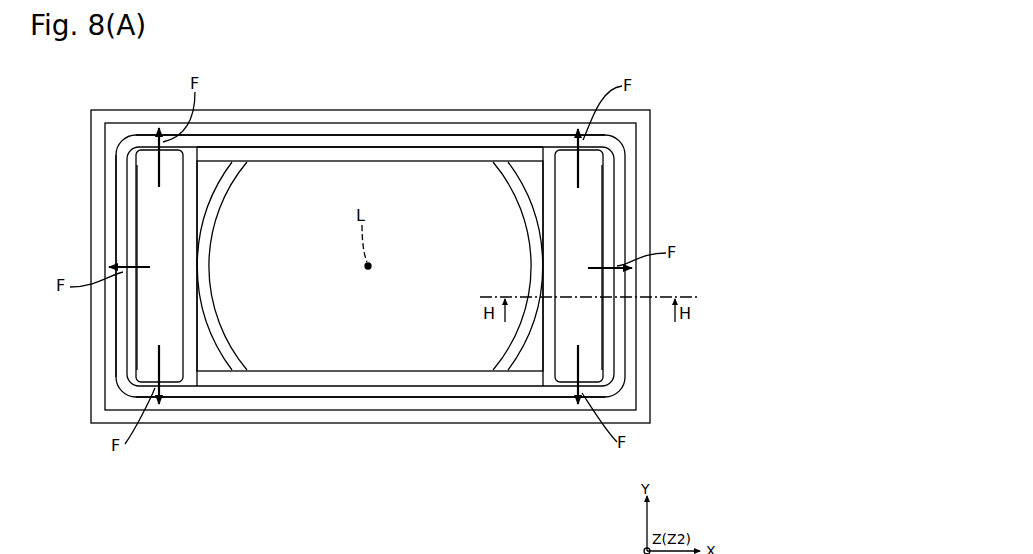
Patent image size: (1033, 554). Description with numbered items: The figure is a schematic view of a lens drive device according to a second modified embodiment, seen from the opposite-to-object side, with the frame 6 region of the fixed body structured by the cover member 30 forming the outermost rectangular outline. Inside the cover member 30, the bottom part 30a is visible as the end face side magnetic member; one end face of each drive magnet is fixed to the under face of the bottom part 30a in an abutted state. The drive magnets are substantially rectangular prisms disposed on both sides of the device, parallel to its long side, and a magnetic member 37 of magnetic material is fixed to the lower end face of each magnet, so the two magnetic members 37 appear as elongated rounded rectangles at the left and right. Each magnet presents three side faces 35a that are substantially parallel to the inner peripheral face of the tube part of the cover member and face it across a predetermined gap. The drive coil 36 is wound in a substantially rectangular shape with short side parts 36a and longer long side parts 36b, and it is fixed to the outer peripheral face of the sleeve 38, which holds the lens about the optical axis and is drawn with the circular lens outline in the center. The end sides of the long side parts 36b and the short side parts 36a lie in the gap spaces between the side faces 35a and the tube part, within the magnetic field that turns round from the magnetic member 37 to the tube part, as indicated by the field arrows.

The optical unit 6 is at (626, 137).
The cover member 30 is at (353, 110).
The bottom part 30a is at (423, 130).
The side faces 35a is at (147, 150).
The drive coil 36 is at (627, 177).
The short side parts 36a is at (112, 325).
The long side parts 36b is at (297, 135).
The magnetic member 37 is at (169, 236).
The sleeve 38 is at (506, 150).